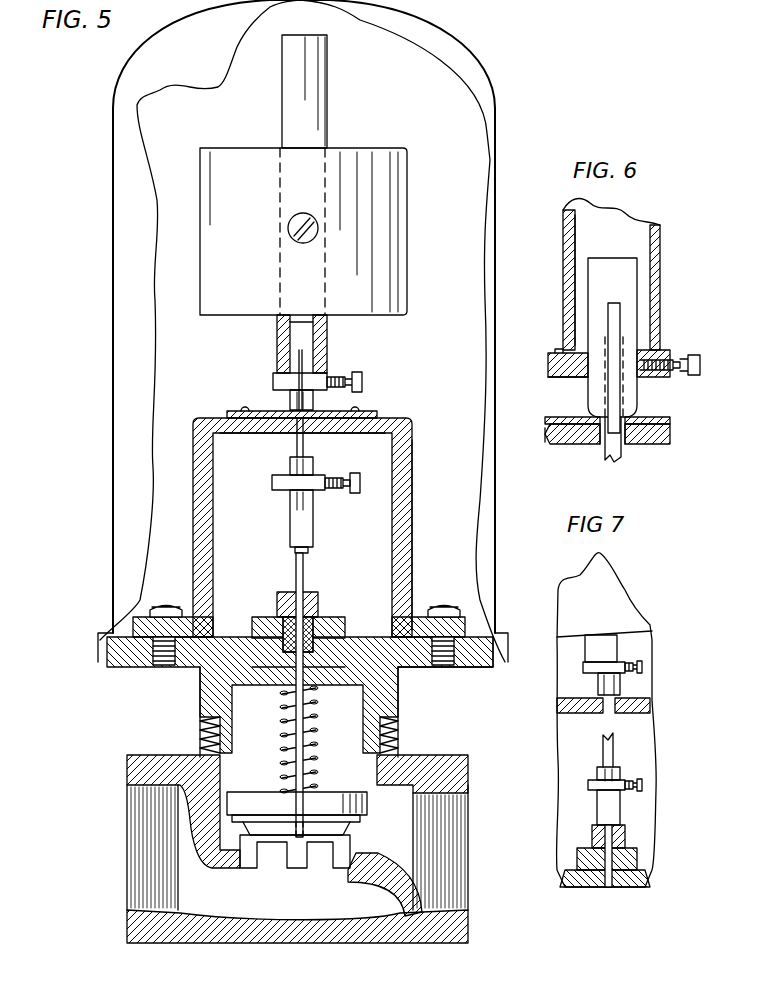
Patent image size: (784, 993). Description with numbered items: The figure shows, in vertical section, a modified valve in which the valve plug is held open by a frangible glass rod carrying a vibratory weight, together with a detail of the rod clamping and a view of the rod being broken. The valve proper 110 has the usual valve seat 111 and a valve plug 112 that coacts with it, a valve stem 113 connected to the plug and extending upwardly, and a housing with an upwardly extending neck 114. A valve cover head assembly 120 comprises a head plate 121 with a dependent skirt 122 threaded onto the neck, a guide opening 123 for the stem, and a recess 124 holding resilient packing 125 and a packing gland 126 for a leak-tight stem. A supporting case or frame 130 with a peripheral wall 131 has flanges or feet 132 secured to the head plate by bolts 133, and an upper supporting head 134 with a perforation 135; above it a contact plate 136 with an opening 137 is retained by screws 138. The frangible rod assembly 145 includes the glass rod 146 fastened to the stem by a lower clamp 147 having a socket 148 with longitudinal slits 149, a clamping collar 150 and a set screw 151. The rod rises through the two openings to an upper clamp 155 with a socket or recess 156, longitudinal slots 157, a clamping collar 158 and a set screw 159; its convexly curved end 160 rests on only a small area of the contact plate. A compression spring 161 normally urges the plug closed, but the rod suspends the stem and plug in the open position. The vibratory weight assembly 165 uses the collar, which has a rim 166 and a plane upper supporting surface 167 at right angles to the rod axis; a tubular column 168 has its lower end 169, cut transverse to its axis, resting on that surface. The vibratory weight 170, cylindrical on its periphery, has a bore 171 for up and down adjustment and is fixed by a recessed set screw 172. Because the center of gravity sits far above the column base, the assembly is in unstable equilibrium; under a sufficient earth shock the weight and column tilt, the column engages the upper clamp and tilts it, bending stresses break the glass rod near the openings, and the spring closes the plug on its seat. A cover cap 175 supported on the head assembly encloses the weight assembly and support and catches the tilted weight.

In FIG. 5, the valve proper 110 is at (140, 738).
In FIG. 5, the valve seat 111 is at (348, 878).
In FIG. 5, the valve plug 112 is at (336, 792).
In FIG. 5, the valve stem 113 is at (304, 745).
In FIG. 7, the valve stem 113 is at (612, 841).
In FIG. 5, the neck 114 is at (400, 748).
In FIG. 5, the valve cover head assembly 120 is at (196, 673).
In FIG. 5, the head plate 121 is at (405, 673).
In FIG. 5, the dependent skirt 122 is at (228, 700).
In FIG. 5, the guide opening 123 is at (330, 637).
In FIG. 5, the recess 124 is at (312, 620).
In FIG. 5, the resilient packing 125 is at (270, 617).
In FIG. 5, the packing gland 126 is at (283, 592).
In FIG. 5, the supporting case or frame 130 is at (180, 510).
In FIG. 5, the peripheral wall 131 is at (402, 505).
In FIG. 5, the flanges or feet 132 is at (446, 608).
In FIG. 5, the bolts 133 is at (152, 609).
In FIG. 5, the upper supporting head 134 is at (368, 436).
In FIG. 6, the perforation 135 is at (600, 440).
In FIG. 6, the contact plate 136 is at (640, 418).
In FIG. 6, the opening 137 is at (650, 444).
In FIG. 5, the screws 138 is at (250, 410).
In FIG. 5, the frangible rod assembly 145 is at (290, 437).
In FIG. 6, the glass rod 146 is at (610, 452).
In FIG. 7, the glass rod 146 is at (613, 753).
In FIG. 5, the lower clamp 147 is at (311, 536).
In FIG. 7, the lower clamp 147 is at (616, 803).
In FIG. 5, the socket 148 is at (290, 500).
In FIG. 5, the longitudinal slits 149 is at (297, 464).
In FIG. 5, the clamping collar 150 is at (318, 492).
In FIG. 5, the set screw 151 is at (352, 493).
In FIG. 6, the upper clamp 155 is at (640, 322).
In FIG. 7, the upper clamp 155 is at (627, 677).
In FIG. 6, the socket or recess 156 is at (626, 340).
In FIG. 6, the longitudinal slots 157 is at (622, 307).
In FIG. 6, the clamping collar 158 is at (553, 379).
In FIG. 6, the set screw 159 is at (682, 358).
In FIG. 6, the convexly curved end 160 is at (548, 428).
In FIG. 5, the compression spring 161 is at (282, 735).
In FIG. 5, the vibratory weight assembly 165 is at (182, 247).
In FIG. 6, the rim 166 is at (560, 352).
In FIG. 6, the upper supporting surface 167 is at (572, 350).
In FIG. 5, the tubular column 168 is at (315, 118).
In FIG. 6, the tubular column 168 is at (660, 242).
In FIG. 7, the tubular column 168 is at (607, 645).
In FIG. 6, the lower end 169 is at (566, 325).
In FIG. 5, the vibratory weight 170 is at (365, 200).
In FIG. 7, the vibratory weight 170 is at (611, 615).
In FIG. 5, the bore 171 is at (328, 170).
In FIG. 5, the set screw 172 is at (292, 227).
In FIG. 5, the cover cap 175 is at (155, 212).